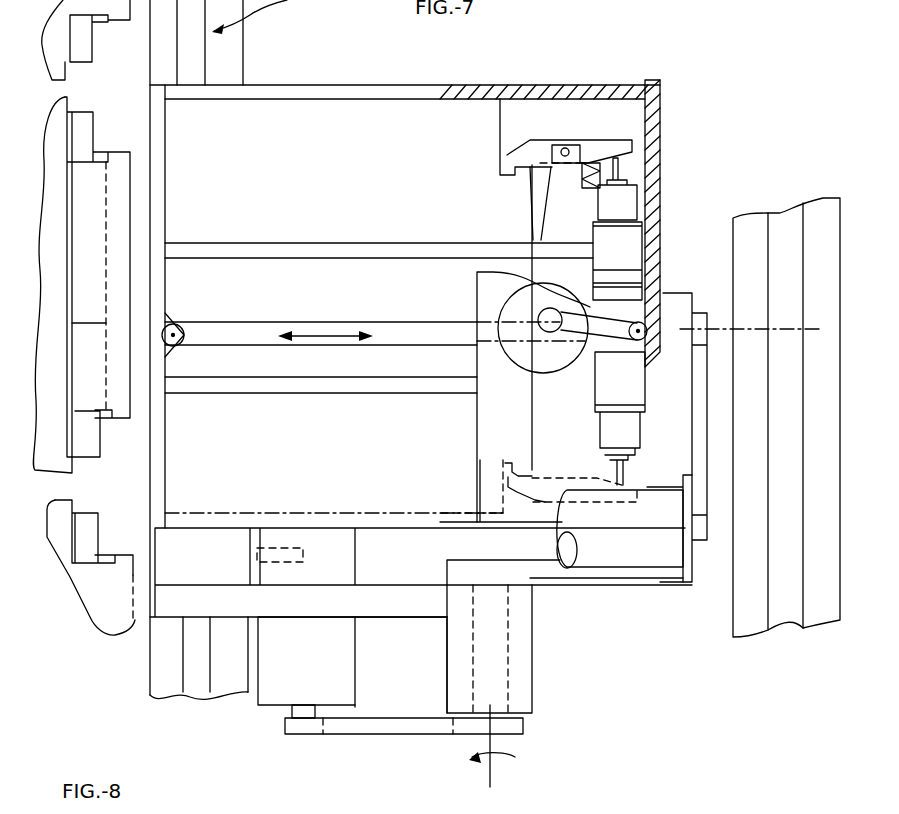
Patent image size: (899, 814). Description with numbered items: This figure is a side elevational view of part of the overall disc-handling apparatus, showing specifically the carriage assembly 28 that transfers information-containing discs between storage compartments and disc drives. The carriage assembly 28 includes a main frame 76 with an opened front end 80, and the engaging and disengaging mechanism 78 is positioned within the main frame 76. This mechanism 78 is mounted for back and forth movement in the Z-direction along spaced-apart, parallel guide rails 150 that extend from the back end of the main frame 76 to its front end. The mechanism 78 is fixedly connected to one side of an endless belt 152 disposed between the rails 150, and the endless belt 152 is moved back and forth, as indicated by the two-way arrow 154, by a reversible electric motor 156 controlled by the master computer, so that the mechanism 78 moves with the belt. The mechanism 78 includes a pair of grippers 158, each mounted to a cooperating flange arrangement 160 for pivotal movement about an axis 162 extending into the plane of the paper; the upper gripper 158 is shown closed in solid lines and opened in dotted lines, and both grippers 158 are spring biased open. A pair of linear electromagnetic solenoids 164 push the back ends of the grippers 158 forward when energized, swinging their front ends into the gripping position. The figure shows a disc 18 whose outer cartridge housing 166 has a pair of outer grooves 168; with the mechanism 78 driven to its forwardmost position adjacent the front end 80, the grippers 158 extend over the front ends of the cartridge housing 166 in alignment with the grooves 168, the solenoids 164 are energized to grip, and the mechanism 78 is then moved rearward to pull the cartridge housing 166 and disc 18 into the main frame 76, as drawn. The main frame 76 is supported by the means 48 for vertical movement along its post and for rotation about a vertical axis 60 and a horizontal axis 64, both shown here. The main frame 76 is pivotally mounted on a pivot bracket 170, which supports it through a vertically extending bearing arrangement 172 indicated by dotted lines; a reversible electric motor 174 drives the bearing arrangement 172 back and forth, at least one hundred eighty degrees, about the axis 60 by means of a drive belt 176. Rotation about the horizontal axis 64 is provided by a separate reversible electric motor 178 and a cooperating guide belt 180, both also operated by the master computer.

The information-containing disc 18 is at (81, 180).
The carriage assembly 28 is at (294, 76).
The means for supporting carriage assembly 48 is at (296, 742).
The vertical axis 60 is at (490, 777).
The horizontal axis 64 is at (748, 327).
The main frame 76 is at (415, 85).
The engaging and disengaging mechanism 78 is at (630, 255).
The opened front end 80 is at (148, 423).
The guide rails 150 is at (282, 253).
The endless belt 152 is at (398, 322).
The two-way arrow 154 is at (338, 337).
The reversible electric motor 156 is at (525, 352).
The grippers 158 is at (525, 155).
The flange arrangement 160 is at (572, 198).
The pivot axis 162 is at (568, 148).
The linear electromagnetic solenoids 164 is at (620, 206).
The cartridge housing 166 is at (89, 310).
The outer grooves 168 is at (104, 113).
The pivot bracket 170 is at (522, 665).
The bearing arrangement 172 is at (473, 666).
The reversible electric motor 174 is at (310, 650).
The drive belt 176 is at (387, 727).
The reversible electric motor 178 is at (648, 555).
The guide belt 180 is at (700, 447).